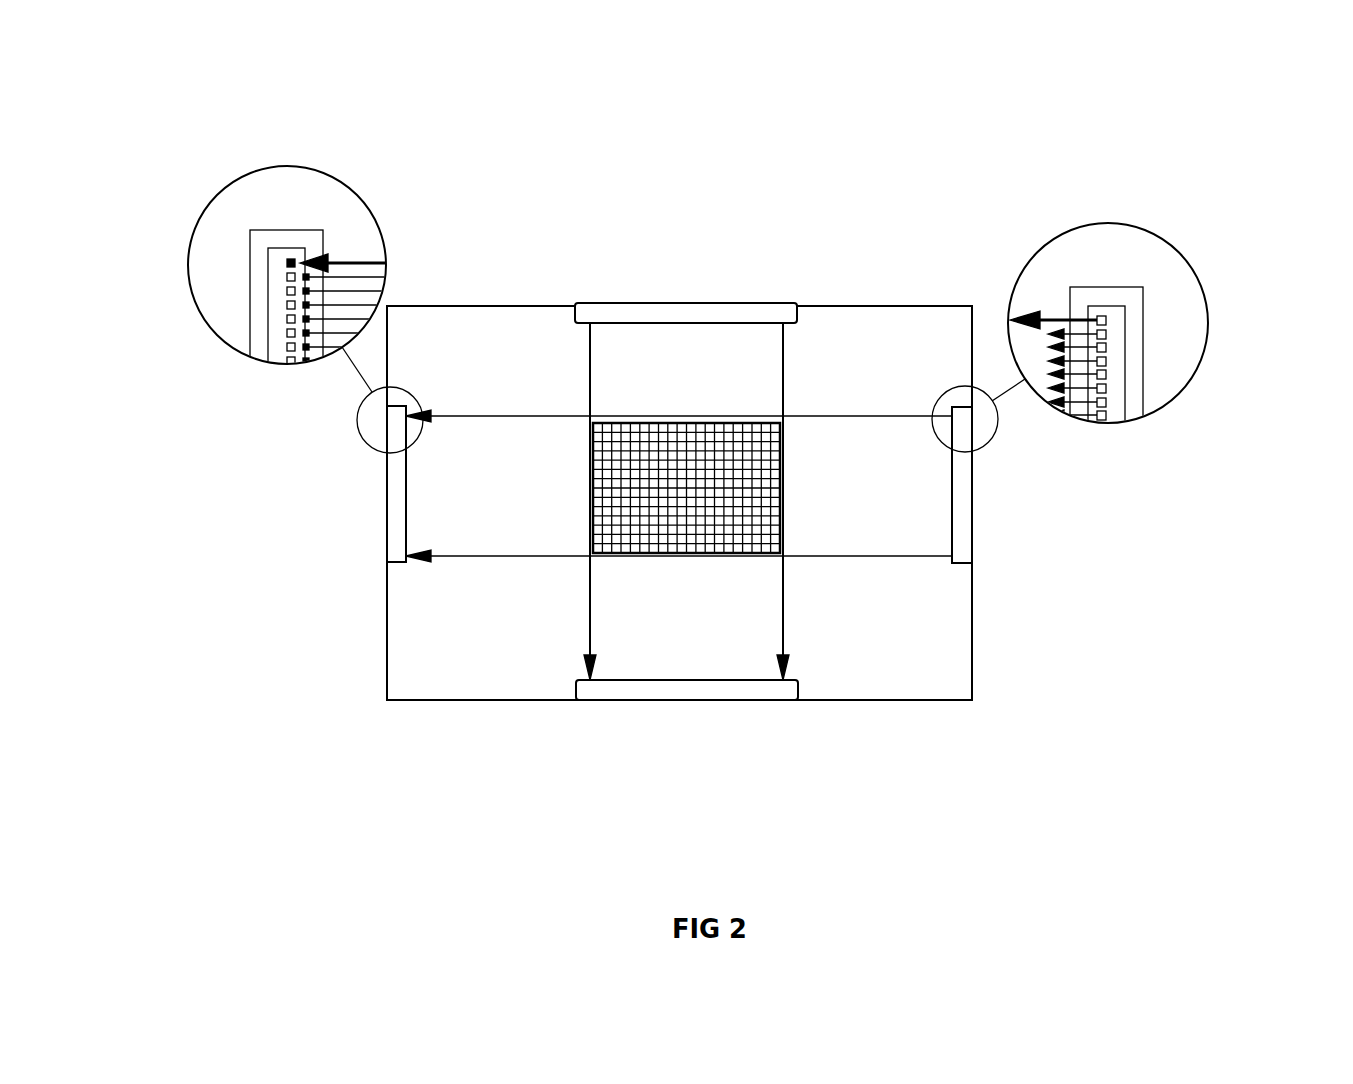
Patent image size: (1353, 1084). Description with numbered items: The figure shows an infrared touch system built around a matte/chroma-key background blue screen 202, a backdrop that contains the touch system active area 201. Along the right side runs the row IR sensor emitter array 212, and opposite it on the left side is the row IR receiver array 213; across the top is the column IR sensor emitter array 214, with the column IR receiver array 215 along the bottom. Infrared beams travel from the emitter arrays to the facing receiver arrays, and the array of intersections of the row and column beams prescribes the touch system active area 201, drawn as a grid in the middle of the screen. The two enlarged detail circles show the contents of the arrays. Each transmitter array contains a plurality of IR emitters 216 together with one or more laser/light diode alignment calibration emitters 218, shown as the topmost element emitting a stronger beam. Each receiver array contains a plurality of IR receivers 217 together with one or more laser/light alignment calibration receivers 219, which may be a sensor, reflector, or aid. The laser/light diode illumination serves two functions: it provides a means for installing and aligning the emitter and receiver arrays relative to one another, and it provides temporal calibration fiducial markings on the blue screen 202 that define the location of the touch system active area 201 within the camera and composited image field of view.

The touch system active area 201 is at (615, 540).
The matte/chroma-key background blue screen 202 is at (483, 690).
The row IR sensor emitter array 212 is at (962, 513).
The row IR receiver array 213 is at (395, 500).
The column IR sensor emitter array 214 is at (650, 303).
The column IR receiver array 215 is at (753, 692).
The IR emitter 216 is at (1105, 353).
The IR receiver 217 is at (285, 275).
The laser/light diode alignment calibration emitter 218 is at (1100, 320).
The laser/light alignment calibration receiver 219 is at (297, 258).